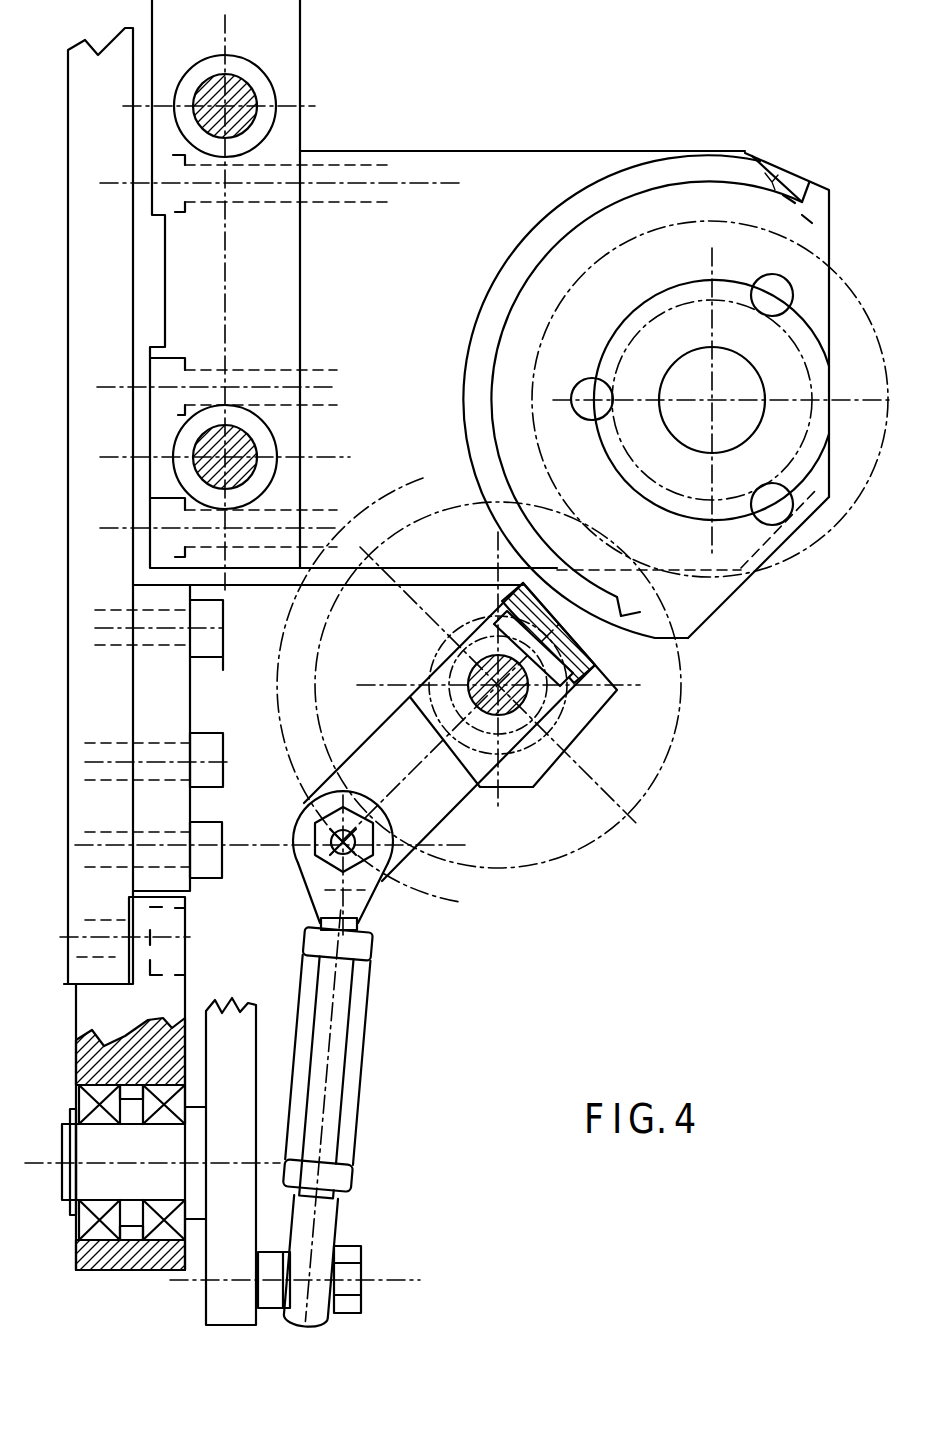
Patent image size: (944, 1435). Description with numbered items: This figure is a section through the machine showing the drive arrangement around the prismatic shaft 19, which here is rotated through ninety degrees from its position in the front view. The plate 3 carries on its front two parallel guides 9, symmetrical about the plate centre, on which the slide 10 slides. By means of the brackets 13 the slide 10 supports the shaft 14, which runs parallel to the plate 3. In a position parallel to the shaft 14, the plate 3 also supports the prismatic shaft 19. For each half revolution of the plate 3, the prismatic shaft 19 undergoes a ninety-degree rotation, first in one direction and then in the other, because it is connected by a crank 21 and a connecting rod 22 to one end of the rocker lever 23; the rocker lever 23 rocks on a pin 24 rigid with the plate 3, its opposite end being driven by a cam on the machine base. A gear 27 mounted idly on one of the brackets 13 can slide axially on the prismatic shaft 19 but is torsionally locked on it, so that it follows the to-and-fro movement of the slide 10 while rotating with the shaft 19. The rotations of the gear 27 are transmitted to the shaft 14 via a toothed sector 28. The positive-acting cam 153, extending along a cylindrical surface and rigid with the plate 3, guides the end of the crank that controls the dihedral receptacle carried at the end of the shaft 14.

The plate 3 is at (125, 900).
The parallel guides 9 is at (245, 87).
The slide 10 is at (290, 137).
The brackets 13 is at (497, 176).
The shaft 14 is at (747, 383).
The prismatic shaft 19 is at (527, 740).
The crank 21 is at (445, 787).
The connecting rod 22 is at (354, 999).
The rocker lever 23 is at (255, 1036).
The pin 24 is at (115, 1183).
The gear 27 is at (677, 677).
The toothed sector 28 is at (818, 547).
The positive-acting cam 153 is at (627, 186).